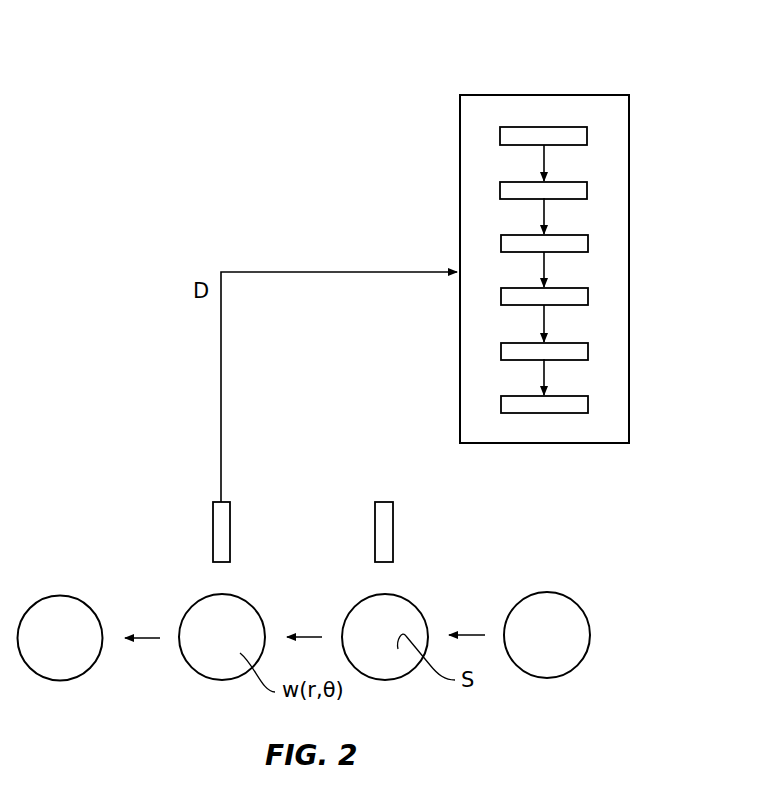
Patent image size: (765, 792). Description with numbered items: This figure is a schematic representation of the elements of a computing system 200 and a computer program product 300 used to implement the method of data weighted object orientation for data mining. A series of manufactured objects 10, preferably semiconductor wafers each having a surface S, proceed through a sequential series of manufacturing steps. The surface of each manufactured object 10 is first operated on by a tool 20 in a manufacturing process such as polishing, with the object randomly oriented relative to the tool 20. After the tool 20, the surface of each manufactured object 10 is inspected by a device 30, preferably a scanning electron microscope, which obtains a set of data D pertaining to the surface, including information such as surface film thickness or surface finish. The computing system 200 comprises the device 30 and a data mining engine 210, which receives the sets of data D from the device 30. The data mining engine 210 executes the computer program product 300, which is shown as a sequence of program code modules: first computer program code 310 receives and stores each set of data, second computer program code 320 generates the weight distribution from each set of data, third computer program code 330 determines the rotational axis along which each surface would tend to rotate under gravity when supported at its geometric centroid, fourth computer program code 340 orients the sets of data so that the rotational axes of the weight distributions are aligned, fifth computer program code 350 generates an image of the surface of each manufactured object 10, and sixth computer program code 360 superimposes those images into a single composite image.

The computing system 200 is at (450, 56).
The data mining engine 210 is at (590, 95).
The computer program product 300 is at (481, 172).
The first computer program code 310 is at (587, 136).
The second computer program code 320 is at (587, 190).
The third computer program code 330 is at (588, 243).
The fourth computer program code 340 is at (588, 296).
The fifth computer program code 350 is at (588, 351).
The sixth computer program code 360 is at (588, 404).
The device 30 is at (213, 530).
The tool 20 is at (393, 530).
The manufactured object 10 is at (223, 594).